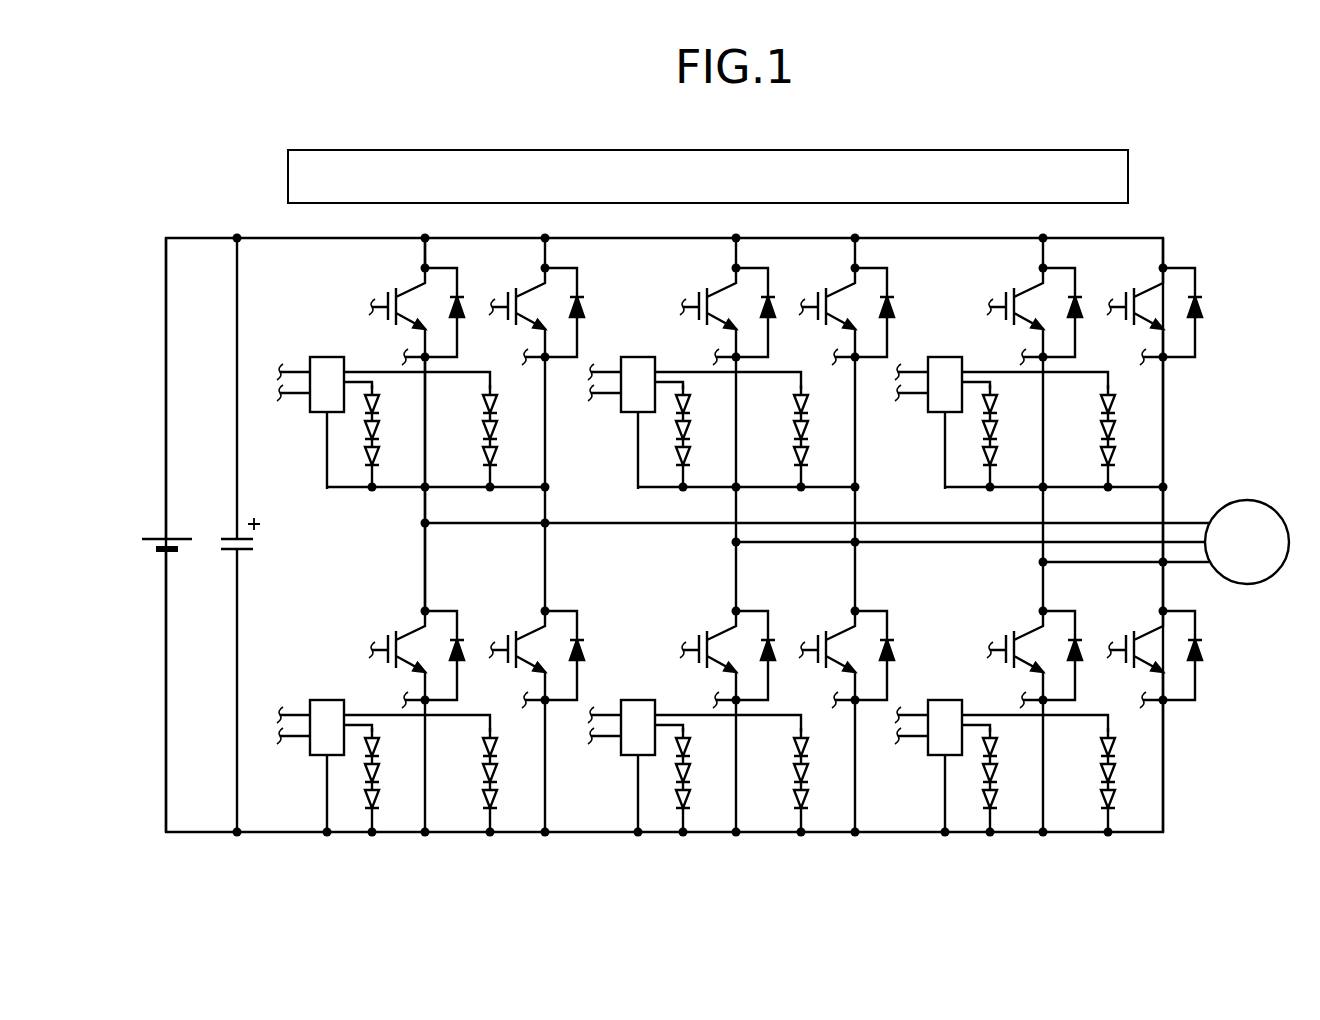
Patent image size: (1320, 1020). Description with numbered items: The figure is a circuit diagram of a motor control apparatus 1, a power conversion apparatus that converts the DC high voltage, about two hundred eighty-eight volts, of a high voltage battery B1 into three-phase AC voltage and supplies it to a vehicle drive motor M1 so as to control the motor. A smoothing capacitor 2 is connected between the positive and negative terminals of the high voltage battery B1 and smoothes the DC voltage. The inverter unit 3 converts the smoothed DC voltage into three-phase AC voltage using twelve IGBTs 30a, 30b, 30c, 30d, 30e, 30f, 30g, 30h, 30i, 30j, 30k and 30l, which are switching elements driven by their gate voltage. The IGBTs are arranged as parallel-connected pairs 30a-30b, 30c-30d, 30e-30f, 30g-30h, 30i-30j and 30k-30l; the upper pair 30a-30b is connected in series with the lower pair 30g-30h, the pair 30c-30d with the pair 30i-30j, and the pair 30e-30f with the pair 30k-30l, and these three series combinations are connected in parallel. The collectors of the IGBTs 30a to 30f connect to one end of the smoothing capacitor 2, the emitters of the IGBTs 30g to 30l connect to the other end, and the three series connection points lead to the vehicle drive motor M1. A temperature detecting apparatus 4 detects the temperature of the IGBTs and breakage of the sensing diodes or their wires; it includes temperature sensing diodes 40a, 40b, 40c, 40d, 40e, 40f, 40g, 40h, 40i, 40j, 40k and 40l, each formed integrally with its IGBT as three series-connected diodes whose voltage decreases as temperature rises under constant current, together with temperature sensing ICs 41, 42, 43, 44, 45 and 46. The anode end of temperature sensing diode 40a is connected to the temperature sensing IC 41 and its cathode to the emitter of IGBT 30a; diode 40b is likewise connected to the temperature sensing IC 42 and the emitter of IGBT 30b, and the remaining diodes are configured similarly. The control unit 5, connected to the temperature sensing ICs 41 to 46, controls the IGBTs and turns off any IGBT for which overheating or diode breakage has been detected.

The motor control apparatus 1 is at (1204, 137).
The smoothing capacitor 2 is at (226, 530).
The inverter unit 3 is at (1162, 223).
The temperature detecting apparatus 4 is at (300, 292).
The control unit 5 is at (710, 157).
The IGBT 30a is at (392, 287).
The IGBT 30b is at (512, 287).
The IGBT 30c is at (703, 287).
The IGBT 30d is at (822, 287).
The IGBT 30e is at (1010, 287).
The IGBT 30f is at (1130, 287).
The IGBT 30g is at (392, 630).
The IGBT 30h is at (512, 630).
The IGBT 30i is at (703, 630).
The IGBT 30j is at (822, 630).
The IGBT 30k is at (1010, 630).
The IGBT 30l is at (1130, 630).
The temperature sensing diode 40a is at (327, 437).
The temperature sensing diode 40b is at (466, 437).
The temperature sensing diode 40c is at (638, 437).
The temperature sensing diode 40d is at (777, 437).
The temperature sensing diode 40e is at (945, 437).
The temperature sensing diode 40f is at (1084, 437).
The temperature sensing diode 40g is at (327, 780).
The temperature sensing diode 40h is at (466, 780).
The temperature sensing diode 40i is at (638, 780).
The temperature sensing diode 40j is at (777, 780).
The temperature sensing diode 40k is at (945, 780).
The temperature sensing diode 40l is at (1084, 780).
The temperature sensing IC 41 is at (328, 367).
The temperature sensing IC 42 is at (639, 367).
The temperature sensing IC 43 is at (946, 367).
The temperature sensing IC 44 is at (328, 710).
The temperature sensing IC 45 is at (639, 710).
The temperature sensing IC 46 is at (946, 710).
The high voltage battery B1 is at (151, 530).
The vehicle drive motor M1 is at (1248, 501).